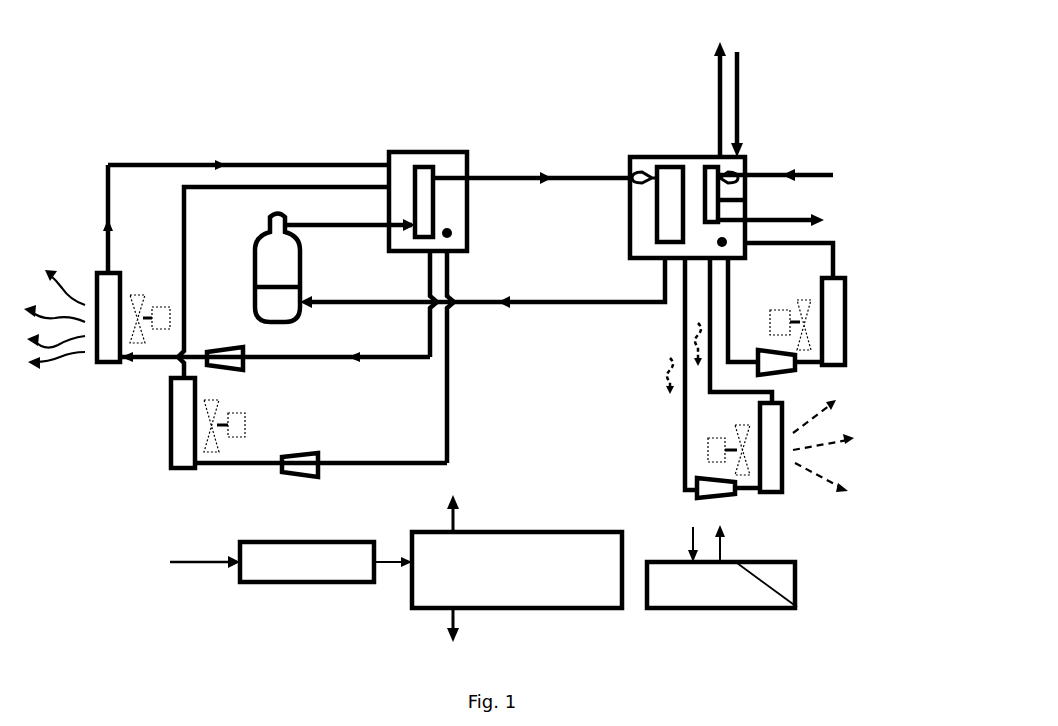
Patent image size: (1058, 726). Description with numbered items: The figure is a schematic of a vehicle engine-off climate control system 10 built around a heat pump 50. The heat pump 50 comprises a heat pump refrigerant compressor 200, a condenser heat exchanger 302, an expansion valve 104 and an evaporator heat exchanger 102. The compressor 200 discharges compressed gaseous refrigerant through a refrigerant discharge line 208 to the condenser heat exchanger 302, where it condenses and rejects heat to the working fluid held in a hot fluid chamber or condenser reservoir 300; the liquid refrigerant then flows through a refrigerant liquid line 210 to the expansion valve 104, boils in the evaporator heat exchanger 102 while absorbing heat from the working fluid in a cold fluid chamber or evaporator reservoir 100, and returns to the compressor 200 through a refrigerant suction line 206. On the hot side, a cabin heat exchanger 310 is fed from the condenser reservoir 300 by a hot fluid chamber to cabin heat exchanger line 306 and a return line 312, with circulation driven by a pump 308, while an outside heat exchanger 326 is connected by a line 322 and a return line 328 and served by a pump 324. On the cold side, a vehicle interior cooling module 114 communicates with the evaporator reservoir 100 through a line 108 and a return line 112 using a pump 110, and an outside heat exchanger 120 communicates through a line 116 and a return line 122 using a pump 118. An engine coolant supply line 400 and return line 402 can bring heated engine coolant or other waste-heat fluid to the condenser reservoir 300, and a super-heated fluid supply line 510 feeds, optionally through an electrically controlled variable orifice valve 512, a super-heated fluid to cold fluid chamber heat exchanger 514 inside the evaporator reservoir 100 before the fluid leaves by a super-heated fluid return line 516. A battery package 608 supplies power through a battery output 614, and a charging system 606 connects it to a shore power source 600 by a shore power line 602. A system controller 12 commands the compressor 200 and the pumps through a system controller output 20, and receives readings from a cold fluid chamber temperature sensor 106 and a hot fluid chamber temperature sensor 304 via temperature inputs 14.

The climate control system 10 is at (140, 125).
The system controller 12 is at (735, 610).
The temperature inputs 14 is at (797, 607).
The system controller output 20 is at (705, 547).
The heat pump 50 is at (272, 92).
The cold fluid chamber or evaporator reservoir 100 is at (690, 155).
The evaporator heat exchanger 102 is at (667, 166).
The expansion valve 104 is at (642, 172).
The cold fluid chamber temperature sensor 106 is at (724, 242).
The cold fluid chamber to vehicle interior cooling modules line 108 is at (726, 304).
The cold fluid chamber to vehicle interior cooling modules pump 110 is at (778, 373).
The vehicle interior cooling modules to cold fluid chamber return line 112 is at (836, 262).
The vehicle interior cooling module 114 is at (846, 300).
The cold fluid chamber to outside heat exchanger line 116 is at (684, 450).
The cold fluid chamber to outside heat exchanger pump 118 is at (730, 497).
The outside heat exchanger 120 is at (784, 490).
The outside heat exchanger to cold fluid chamber return line 122 is at (708, 388).
The heat pump refrigerant compressor 200 is at (253, 256).
The refrigerant suction line 206 is at (547, 304).
The refrigerant discharge line 208 is at (320, 222).
The refrigerant liquid line 210 is at (522, 176).
The hot fluid chamber or condenser reservoir 300 is at (447, 150).
The condenser heat exchanger 302 is at (421, 166).
The hot fluid chamber temperature sensor 304 is at (449, 232).
The hot fluid chamber to cabin heat exchanger line 306 is at (449, 426).
The hot fluid chamber to cabin heat exchanger pump 308 is at (207, 350).
The cabin heat exchanger 310 is at (96, 346).
The cabin heat exchanger to hot fluid chamber return line 312 is at (106, 178).
The hot fluid chamber to outside heat exchanger line 322 is at (449, 397).
The hot fluid chamber to outside heat exchanger pump 324 is at (290, 478).
The outside heat exchanger 326 is at (170, 428).
The outside heat exchanger to hot fluid chamber return line 328 is at (205, 186).
The engine coolant supply line 400 is at (737, 72).
The engine coolant return line 402 is at (720, 108).
The super-heated fluid supply line 510 is at (747, 193).
The electrically controlled variable orifice valve 512 is at (745, 165).
The super-heated fluid to cold fluid chamber heat exchanger 514 is at (786, 174).
The super-heated fluid return line 516 is at (782, 218).
The shore power source 600 is at (170, 564).
The shore power line 602 is at (200, 564).
The charging system 606 is at (285, 584).
The battery package 608 is at (568, 609).
The battery output 614 is at (456, 518).